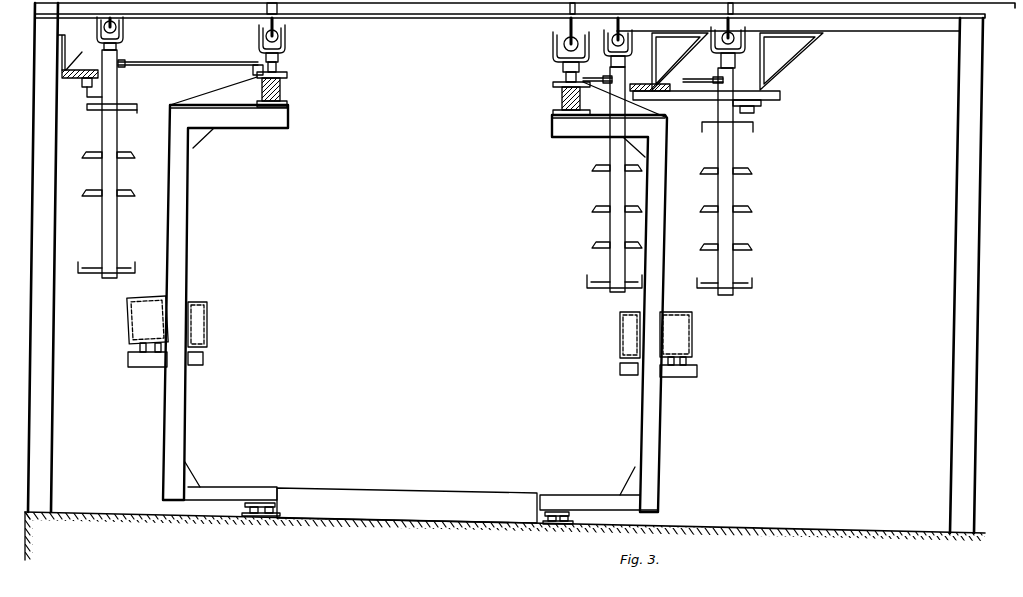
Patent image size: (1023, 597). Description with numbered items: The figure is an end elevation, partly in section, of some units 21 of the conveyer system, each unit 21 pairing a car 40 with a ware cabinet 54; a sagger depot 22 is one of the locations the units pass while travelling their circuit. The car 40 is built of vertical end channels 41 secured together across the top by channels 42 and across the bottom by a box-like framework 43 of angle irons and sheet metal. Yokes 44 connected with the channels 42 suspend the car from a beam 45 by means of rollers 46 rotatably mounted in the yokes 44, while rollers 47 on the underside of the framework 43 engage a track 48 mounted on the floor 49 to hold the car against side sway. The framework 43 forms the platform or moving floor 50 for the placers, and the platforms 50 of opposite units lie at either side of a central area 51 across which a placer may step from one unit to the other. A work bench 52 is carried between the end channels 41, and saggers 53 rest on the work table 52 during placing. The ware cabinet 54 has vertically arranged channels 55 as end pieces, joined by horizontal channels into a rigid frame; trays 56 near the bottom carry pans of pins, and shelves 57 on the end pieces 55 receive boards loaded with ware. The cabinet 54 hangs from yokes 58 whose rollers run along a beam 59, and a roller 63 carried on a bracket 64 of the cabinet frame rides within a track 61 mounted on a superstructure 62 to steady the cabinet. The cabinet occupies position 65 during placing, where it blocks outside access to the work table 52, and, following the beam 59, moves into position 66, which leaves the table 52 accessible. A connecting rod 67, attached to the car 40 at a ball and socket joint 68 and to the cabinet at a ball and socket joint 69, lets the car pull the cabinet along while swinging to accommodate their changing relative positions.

The unit 21 is at (426, 195).
The sagger depot 22 is at (532, 0).
The car 40 is at (188, 232).
The end channel 41 is at (656, 269).
The top channel 42 is at (558, 103).
The framework 43 is at (578, 495).
The yoke 44 is at (547, 50).
The beam 45 is at (560, 29).
The roller 46 is at (553, 44).
The roller 47 is at (288, 506).
The track 48 is at (281, 515).
The floor 49 is at (145, 512).
The platform 50 is at (217, 487).
The central area 51 is at (398, 490).
The work bench 52 is at (206, 358).
The sagger 53 is at (694, 339).
The ware cabinet 54 is at (118, 131).
The vertical channel 55 is at (735, 230).
The tray 56 is at (84, 276).
The shelf 57 is at (436, 203).
The yoke 58 is at (427, 45).
The beam 59 is at (125, 23).
The track 61 is at (80, 78).
The superstructure 62 is at (67, 64).
The roller 63 is at (85, 99).
The bracket 64 is at (100, 92).
The placing position 65 is at (94, 133).
The shifted position 66 is at (590, 237).
The connecting rod 67 is at (168, 50).
The ball and socket joint 68 is at (255, 68).
The ball and socket joint 69 is at (124, 63).